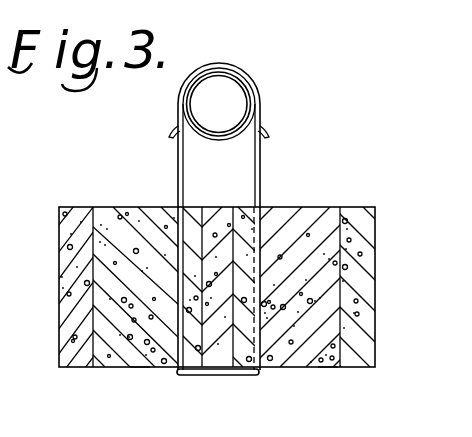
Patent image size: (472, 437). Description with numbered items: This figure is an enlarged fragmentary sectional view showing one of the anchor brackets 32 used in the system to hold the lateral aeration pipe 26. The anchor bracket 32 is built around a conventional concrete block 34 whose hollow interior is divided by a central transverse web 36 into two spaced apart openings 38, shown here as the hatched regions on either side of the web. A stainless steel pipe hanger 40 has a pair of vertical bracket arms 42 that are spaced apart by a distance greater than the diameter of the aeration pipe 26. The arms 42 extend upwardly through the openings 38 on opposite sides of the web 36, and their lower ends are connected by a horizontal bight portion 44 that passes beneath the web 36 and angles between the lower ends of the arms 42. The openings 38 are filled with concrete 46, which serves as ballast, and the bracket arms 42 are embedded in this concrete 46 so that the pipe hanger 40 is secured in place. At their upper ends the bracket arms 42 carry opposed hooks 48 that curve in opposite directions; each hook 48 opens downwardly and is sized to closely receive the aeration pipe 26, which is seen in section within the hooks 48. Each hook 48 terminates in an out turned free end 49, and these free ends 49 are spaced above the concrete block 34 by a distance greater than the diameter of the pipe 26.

The lateral aeration pipe 26 is at (212, 72).
The anchor bracket 32 is at (312, 94).
The concrete block 34 is at (376, 277).
The central transverse web 36 is at (218, 218).
The openings 38 is at (96, 228).
The pipe hanger 40 is at (218, 223).
The bracket arms 42 is at (179, 171).
The bight portion 44 is at (252, 377).
The concrete 46 is at (140, 368).
The hooks 48 is at (236, 66).
The out turned free end 49 is at (172, 134).